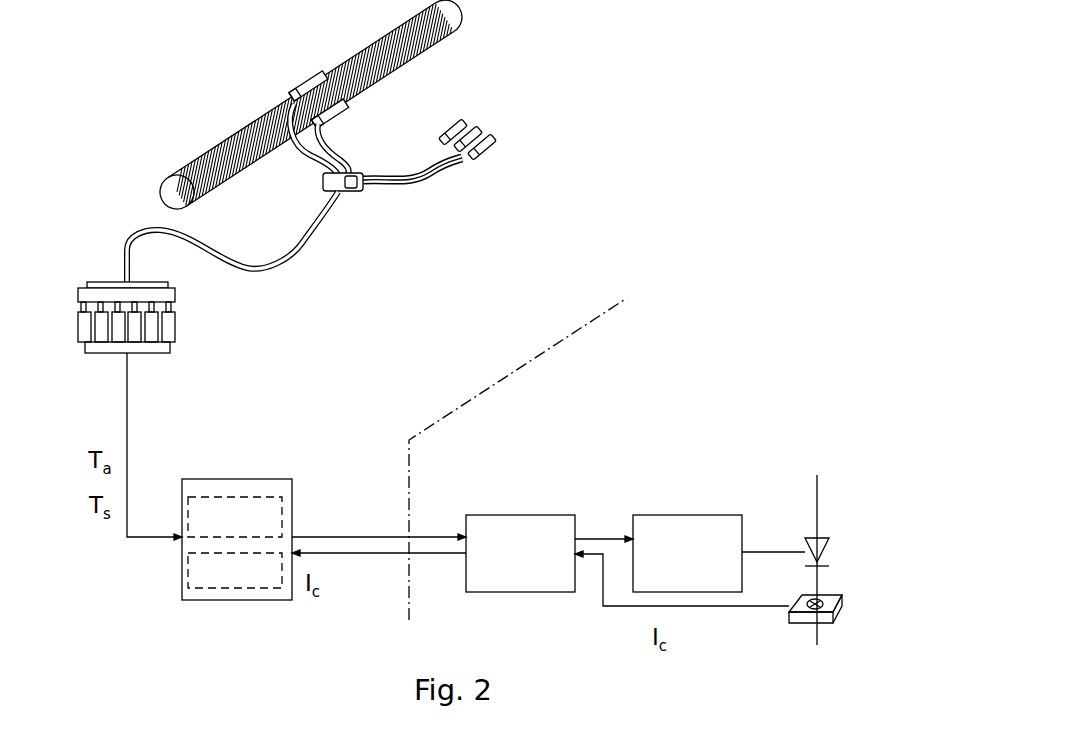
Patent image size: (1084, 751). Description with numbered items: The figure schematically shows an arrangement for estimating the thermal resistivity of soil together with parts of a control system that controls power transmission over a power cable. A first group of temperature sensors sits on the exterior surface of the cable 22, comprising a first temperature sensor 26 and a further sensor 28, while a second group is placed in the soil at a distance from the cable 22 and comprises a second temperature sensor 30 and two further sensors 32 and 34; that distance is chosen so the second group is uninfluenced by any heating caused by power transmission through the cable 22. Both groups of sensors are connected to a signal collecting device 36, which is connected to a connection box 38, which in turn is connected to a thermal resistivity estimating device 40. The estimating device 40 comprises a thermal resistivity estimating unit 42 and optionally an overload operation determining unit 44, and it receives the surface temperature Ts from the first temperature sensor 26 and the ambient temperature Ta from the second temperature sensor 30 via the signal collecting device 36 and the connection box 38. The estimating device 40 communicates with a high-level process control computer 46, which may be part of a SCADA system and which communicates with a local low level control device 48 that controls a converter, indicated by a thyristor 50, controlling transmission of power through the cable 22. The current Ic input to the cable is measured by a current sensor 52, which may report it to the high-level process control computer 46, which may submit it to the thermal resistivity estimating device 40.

The cable 22 is at (238, 150).
The first temperature sensor 26 is at (303, 97).
The further sensor 28 is at (337, 103).
The second temperature sensor 30 is at (452, 122).
The further sensor 32 is at (482, 128).
The further sensor 34 is at (500, 145).
The signal collecting device 36 is at (363, 183).
The connection box 38 is at (175, 293).
The thermal resistivity estimating device 40 is at (282, 494).
The thermal resistivity estimating unit 42 is at (235, 517).
The overload operation determining unit 44 is at (235, 570).
The high-level process control computer 46 is at (520, 553).
The local low level control device 48 is at (687, 553).
The thyristor 50 is at (825, 545).
The current sensor 52 is at (843, 595).